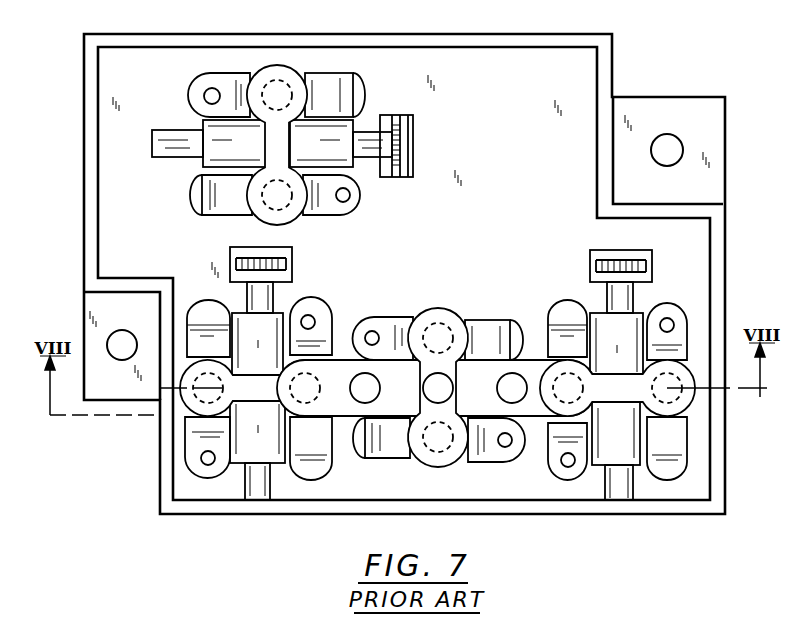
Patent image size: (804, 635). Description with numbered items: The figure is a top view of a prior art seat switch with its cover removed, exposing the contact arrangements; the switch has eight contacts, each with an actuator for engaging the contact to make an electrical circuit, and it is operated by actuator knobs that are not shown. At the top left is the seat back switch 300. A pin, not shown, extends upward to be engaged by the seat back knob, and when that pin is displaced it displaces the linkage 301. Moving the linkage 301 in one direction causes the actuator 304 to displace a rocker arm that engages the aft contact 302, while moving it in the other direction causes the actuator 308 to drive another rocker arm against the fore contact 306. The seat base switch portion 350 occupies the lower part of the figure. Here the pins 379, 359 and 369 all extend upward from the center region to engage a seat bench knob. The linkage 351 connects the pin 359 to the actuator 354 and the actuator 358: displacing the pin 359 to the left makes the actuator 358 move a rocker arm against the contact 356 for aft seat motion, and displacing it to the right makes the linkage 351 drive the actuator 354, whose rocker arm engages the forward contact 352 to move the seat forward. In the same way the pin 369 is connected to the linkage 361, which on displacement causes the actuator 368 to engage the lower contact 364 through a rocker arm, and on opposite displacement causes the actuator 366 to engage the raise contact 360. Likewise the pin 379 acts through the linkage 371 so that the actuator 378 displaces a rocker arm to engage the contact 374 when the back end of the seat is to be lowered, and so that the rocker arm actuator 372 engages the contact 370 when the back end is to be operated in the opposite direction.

The seat back switch 300 is at (319, 149).
The linkage 301 is at (210, 160).
The aft contact 302 is at (208, 92).
The actuator 304 is at (284, 80).
The fore contact 306 is at (349, 200).
The actuator 308 is at (269, 208).
The seat base switch portion 350 is at (436, 373).
The linkage 351 is at (423, 307).
The forward contact 352 is at (511, 446).
The actuator 354 is at (433, 457).
The contact 356 is at (376, 333).
The actuator 358 is at (438, 316).
The pin 359 is at (461, 337).
The raise contact 360 is at (673, 320).
The linkage 361 is at (601, 322).
The lower contact 364 is at (569, 468).
The actuator 366 is at (688, 406).
The actuator 368 is at (583, 389).
The pin 369 is at (514, 374).
The contact 370 is at (312, 318).
The linkage 371 is at (245, 452).
The rocker arm actuator 372 is at (257, 345).
The contact 374 is at (201, 463).
The actuator 378 is at (191, 410).
The pin 379 is at (365, 404).